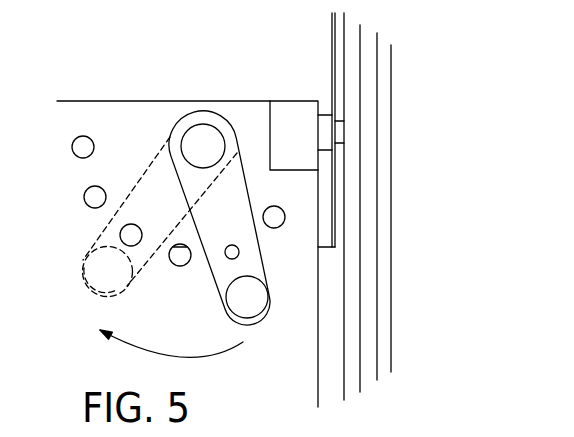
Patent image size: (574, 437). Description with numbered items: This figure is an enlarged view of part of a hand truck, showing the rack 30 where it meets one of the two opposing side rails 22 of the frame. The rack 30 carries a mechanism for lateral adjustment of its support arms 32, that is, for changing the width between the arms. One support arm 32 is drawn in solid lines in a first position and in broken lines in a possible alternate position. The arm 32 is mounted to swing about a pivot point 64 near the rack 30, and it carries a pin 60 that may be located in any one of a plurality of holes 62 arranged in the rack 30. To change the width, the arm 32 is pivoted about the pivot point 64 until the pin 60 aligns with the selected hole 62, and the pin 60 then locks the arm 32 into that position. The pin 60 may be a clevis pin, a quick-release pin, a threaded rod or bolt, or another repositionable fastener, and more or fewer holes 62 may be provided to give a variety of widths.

The side rail 22 is at (378, 80).
The rack 30 is at (125, 70).
The support arm 32 is at (247, 302).
The pin 60 is at (225, 253).
The holes 62 is at (68, 160).
The pivot point 64 is at (203, 140).